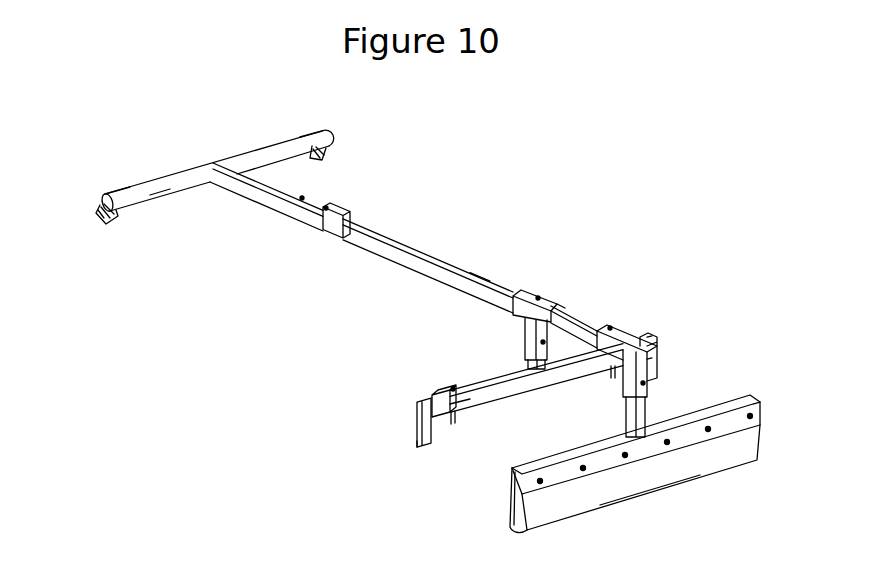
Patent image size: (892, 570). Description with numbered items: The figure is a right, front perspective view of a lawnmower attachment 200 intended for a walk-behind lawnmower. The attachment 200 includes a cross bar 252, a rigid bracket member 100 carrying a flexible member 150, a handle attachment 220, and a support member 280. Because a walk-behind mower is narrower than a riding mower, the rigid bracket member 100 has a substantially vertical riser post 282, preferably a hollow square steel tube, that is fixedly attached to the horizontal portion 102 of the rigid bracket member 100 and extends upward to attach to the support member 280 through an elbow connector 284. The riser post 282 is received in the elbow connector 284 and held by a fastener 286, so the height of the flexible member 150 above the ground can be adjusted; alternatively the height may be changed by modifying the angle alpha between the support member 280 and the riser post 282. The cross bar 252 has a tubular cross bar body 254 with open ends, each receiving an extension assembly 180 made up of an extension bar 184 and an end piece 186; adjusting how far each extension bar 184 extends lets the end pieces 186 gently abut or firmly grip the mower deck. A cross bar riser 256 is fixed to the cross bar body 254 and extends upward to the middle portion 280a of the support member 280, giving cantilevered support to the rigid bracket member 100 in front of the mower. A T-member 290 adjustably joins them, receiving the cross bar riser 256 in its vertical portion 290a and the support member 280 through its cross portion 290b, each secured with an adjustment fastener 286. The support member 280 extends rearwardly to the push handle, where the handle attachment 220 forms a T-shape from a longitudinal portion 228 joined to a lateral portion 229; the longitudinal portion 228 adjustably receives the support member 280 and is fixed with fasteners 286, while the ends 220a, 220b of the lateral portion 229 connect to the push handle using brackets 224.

The rigid bracket member 100 is at (737, 420).
The horizontal portion 102 is at (527, 461).
The flexible member 150 is at (715, 462).
The extension assembly 180 is at (412, 400).
The extension bar 184 is at (440, 412).
The end piece 186 is at (417, 441).
The lawnmower attachment 200 is at (608, 147).
The handle attachment 220 is at (192, 163).
The end of handle attachment 220a is at (118, 195).
The end of handle attachment 220b is at (308, 138).
The bracket 224 is at (101, 206).
The longitudinal portion 228 is at (252, 180).
The lateral portion 229 is at (160, 186).
The cross bar 252 is at (450, 387).
The cross bar body 254 is at (456, 400).
The cross bar riser 256 is at (528, 362).
The support member 280 is at (395, 240).
The middle portion 280a is at (479, 278).
The riser post 282 is at (652, 408).
The elbow connector 284 is at (640, 340).
The fastener 286 is at (95, 212).
The T-member 290 is at (575, 298).
The vertical portion 290a is at (530, 349).
The cross portion 290b is at (525, 293).
The angle alpha is at (613, 372).